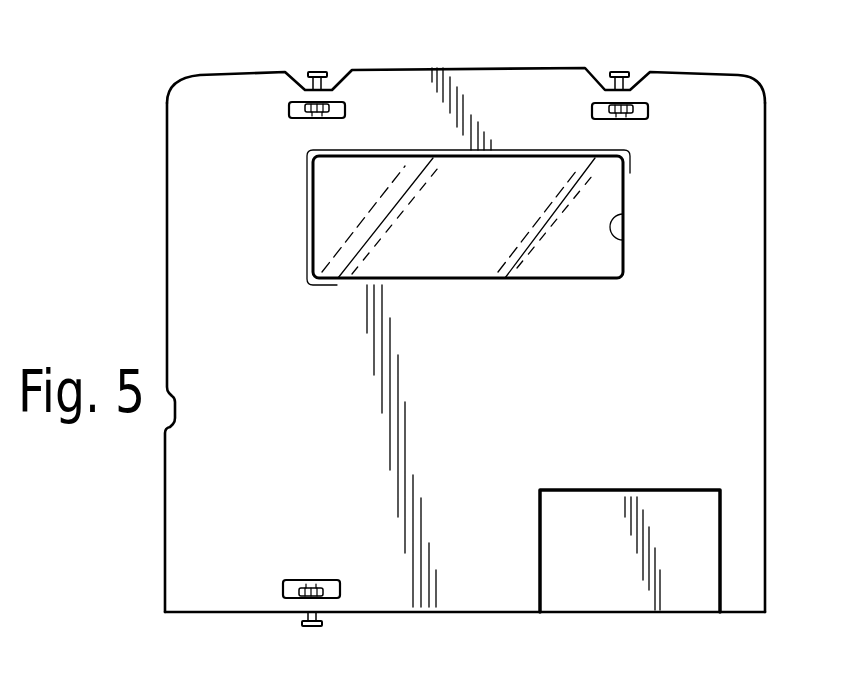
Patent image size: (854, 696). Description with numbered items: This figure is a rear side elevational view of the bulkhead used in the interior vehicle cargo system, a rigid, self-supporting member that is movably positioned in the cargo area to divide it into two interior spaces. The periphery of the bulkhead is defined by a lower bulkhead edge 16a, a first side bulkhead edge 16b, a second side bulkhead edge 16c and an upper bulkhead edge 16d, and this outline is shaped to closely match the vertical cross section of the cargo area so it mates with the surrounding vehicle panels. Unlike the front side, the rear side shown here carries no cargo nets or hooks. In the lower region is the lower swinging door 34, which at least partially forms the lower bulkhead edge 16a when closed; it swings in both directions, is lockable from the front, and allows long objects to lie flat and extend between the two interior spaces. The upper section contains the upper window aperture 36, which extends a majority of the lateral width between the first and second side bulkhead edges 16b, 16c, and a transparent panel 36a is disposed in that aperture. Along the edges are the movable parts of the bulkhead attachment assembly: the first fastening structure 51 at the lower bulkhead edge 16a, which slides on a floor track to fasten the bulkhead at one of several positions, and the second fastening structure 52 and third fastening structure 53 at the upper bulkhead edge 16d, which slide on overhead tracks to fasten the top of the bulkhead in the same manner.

The lower bulkhead edge 16a is at (447, 612).
The first side bulkhead edge 16b is at (765, 318).
The second side bulkhead edge 16c is at (167, 273).
The upper bulkhead edge 16d is at (473, 68).
The lower swinging door 34 is at (607, 525).
The upper window aperture 36 is at (624, 240).
The transparent panel 36a is at (553, 256).
The first fastening structure 51 is at (314, 578).
The second fastening structure 52 is at (654, 124).
The third fastening structure 53 is at (296, 124).